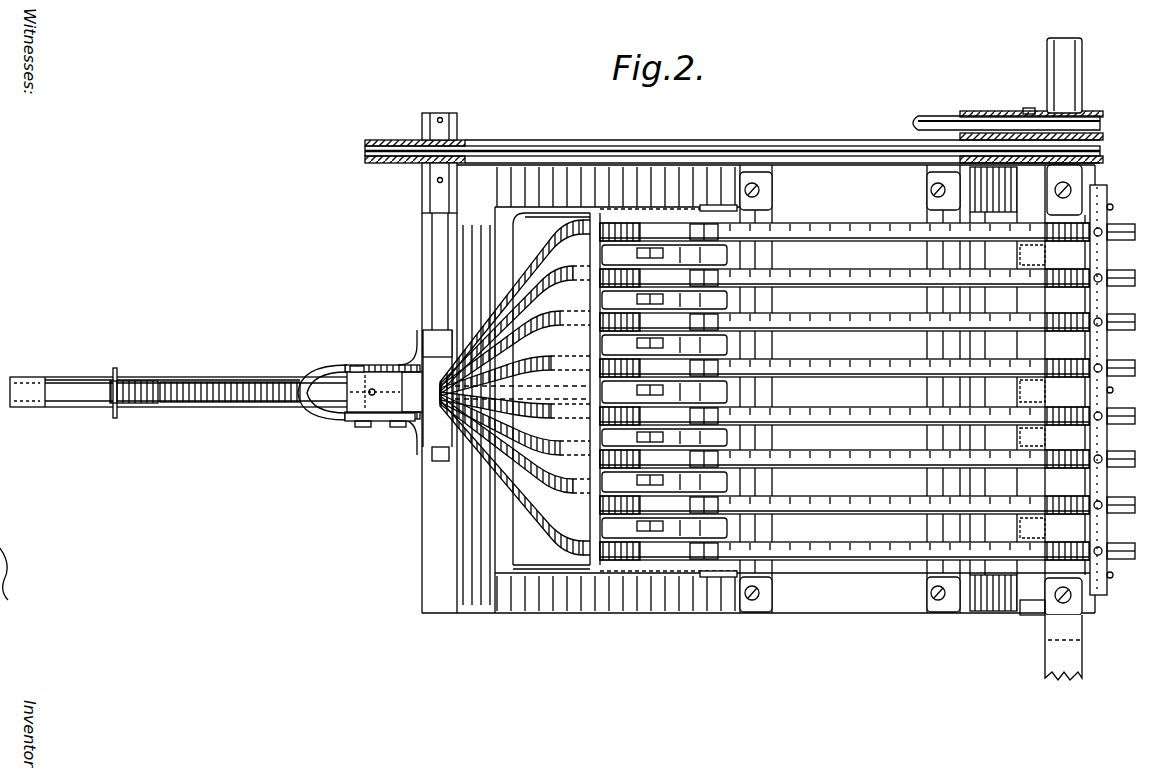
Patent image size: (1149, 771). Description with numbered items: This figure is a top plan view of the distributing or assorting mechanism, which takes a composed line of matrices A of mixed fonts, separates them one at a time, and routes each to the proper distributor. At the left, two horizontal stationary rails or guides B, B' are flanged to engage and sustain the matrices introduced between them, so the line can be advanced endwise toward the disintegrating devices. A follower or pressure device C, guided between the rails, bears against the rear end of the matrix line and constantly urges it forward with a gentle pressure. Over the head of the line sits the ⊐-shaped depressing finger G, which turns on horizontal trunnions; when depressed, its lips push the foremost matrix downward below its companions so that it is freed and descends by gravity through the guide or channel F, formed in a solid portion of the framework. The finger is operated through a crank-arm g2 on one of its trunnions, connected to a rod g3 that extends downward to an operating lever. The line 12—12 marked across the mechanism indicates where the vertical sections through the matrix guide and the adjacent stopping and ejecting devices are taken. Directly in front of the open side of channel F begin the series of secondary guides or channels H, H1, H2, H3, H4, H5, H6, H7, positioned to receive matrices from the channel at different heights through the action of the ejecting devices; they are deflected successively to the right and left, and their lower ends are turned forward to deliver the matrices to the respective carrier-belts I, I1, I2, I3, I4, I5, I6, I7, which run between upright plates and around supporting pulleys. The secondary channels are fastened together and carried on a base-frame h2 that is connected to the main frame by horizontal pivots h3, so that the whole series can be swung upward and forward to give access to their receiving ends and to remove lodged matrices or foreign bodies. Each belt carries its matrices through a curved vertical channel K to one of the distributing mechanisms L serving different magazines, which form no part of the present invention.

The stationary rail B is at (180, 407).
The stationary rail B' is at (172, 363).
The follower C is at (149, 395).
The knurled shaft A is at (270, 396).
The depressing finger G is at (350, 384).
The section line 12— 12 is at (355, 366).
The guide channel F is at (404, 366).
The crank-arm g2 is at (363, 421).
The rod g3 is at (398, 421).
The secondary channel H is at (490, 470).
The secondary channel H1 is at (495, 318).
The secondary channel H2 is at (560, 490).
The secondary channel H3 is at (560, 292).
The secondary channel H4 is at (556, 447).
The secondary channel H5 is at (553, 334).
The secondary channel H6 is at (548, 413).
The secondary channel H7 is at (545, 367).
The base-frame h2 is at (626, 213).
The horizontal pivot h3 is at (722, 628).
The carrier-belt I is at (836, 547).
The carrier-belt I1 is at (858, 232).
The carrier-belt I2 is at (878, 503).
The carrier-belt I3 is at (858, 278).
The carrier-belt I4 is at (878, 457).
The carrier-belt I5 is at (858, 322).
The carrier-belt I6 is at (878, 413).
The carrier-belt I7 is at (878, 368).
The curved vertical channel K is at (1018, 232).
The distributing mechanism L is at (1112, 390).